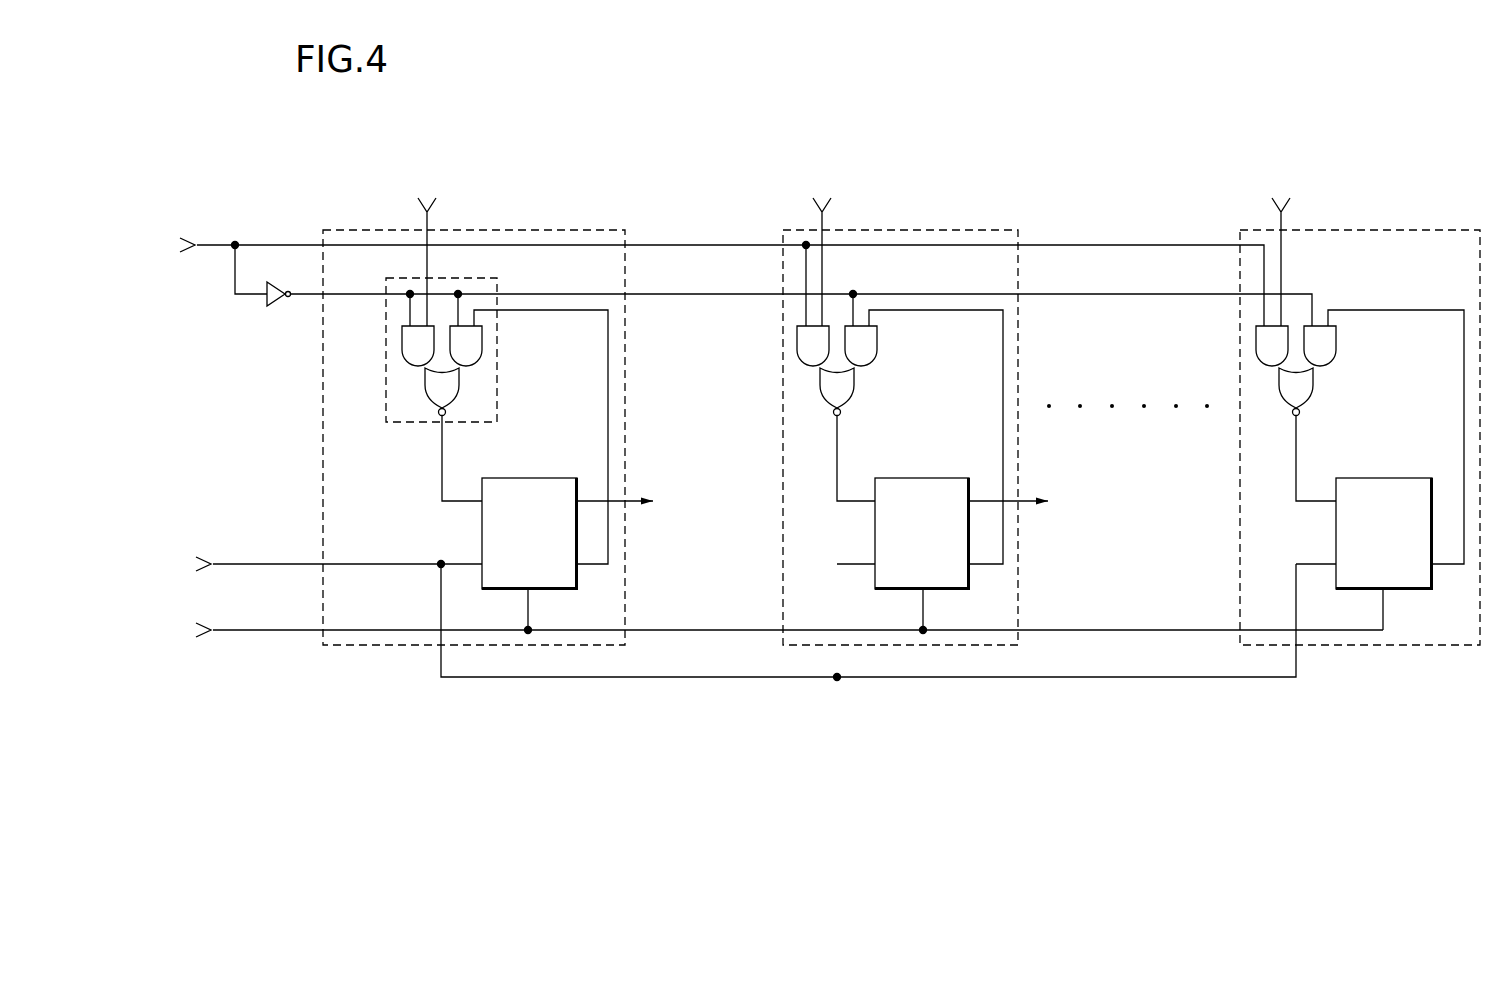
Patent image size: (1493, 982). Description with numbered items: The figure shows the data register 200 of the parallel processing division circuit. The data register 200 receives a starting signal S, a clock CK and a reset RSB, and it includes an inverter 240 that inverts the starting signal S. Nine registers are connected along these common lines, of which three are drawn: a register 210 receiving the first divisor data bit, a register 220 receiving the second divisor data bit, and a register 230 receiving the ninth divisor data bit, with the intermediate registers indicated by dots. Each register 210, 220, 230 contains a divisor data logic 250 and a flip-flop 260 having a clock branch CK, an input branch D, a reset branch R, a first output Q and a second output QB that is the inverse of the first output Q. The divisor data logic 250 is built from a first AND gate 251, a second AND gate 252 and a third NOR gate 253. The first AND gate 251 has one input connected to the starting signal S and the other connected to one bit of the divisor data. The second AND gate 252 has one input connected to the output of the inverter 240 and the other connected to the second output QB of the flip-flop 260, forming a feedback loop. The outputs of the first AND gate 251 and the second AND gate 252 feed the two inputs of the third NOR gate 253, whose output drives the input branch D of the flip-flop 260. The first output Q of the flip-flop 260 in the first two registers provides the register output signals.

The data register 200 is at (697, 119).
The register 210 is at (531, 230).
The register 220 is at (925, 230).
The register 230 is at (1385, 230).
The inverter 240 is at (273, 306).
The divisor data logic 250 is at (497, 374).
The first AND gate 251 is at (402, 343).
The second AND gate 252 is at (482, 343).
The third NOR gate 253 is at (427, 378).
The flip-flop 260 is at (528, 478).